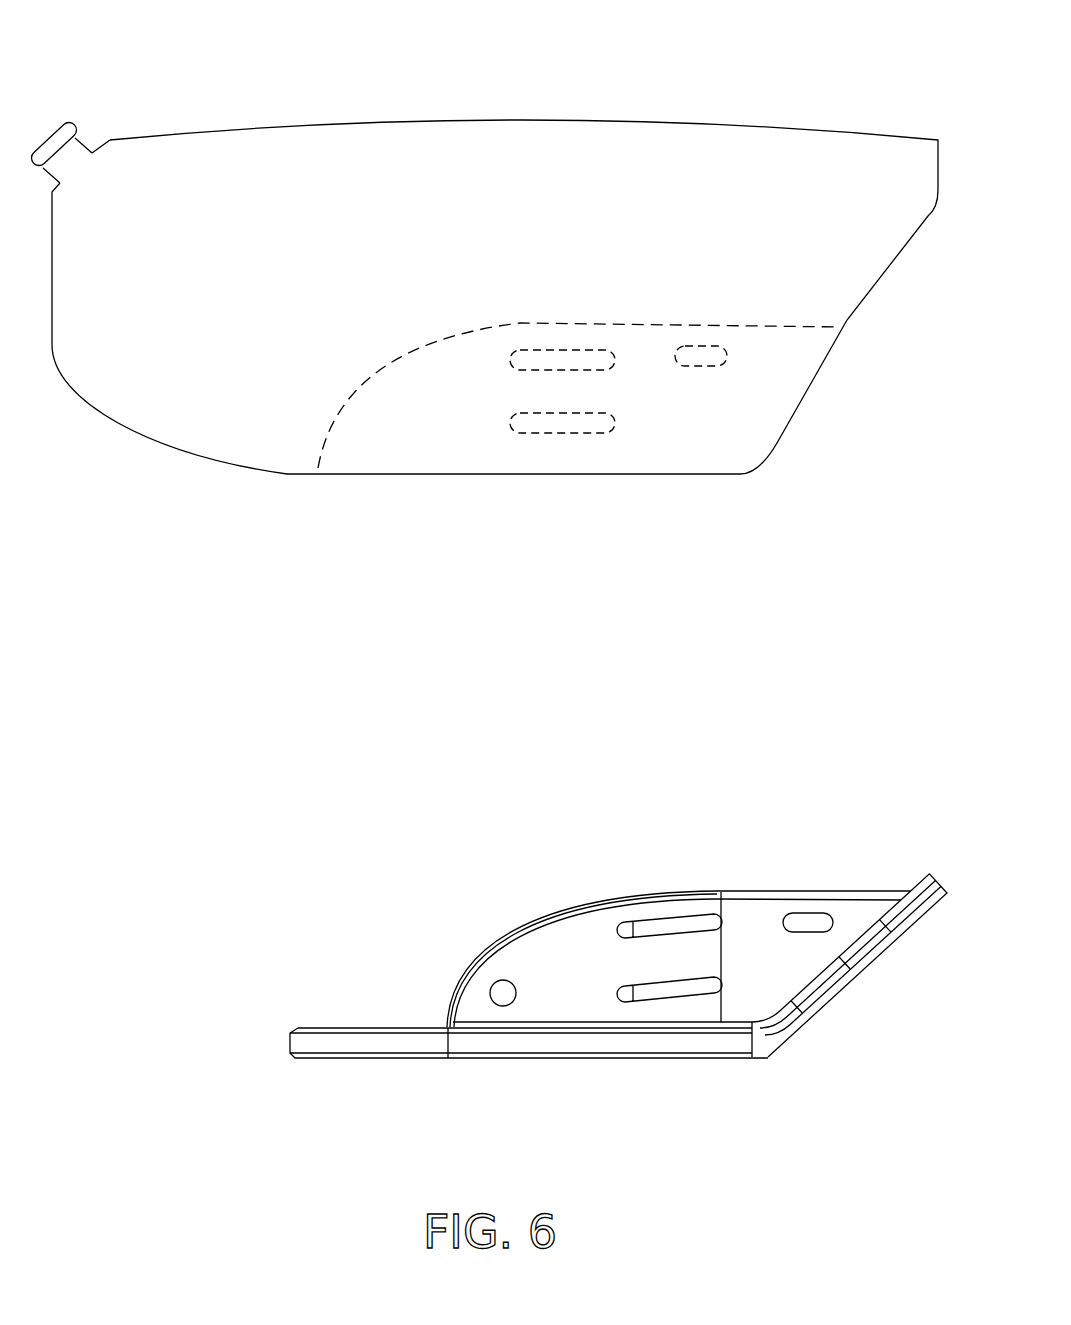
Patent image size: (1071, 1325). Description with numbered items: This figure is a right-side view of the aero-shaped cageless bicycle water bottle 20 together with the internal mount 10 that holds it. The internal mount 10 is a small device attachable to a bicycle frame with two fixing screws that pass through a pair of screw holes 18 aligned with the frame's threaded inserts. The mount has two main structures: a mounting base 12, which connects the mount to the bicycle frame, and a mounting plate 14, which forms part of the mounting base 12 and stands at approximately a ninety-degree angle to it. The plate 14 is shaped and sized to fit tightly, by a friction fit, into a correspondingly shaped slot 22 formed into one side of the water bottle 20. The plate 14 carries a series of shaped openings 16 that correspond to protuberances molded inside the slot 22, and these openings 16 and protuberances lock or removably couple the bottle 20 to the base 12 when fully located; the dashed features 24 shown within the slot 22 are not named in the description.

The internal mount 10 is at (618, 921).
The mounting base 12 is at (415, 1045).
The mounting plate 14 is at (847, 910).
The shaped openings 16 is at (797, 918).
The screw holes 18 is at (362, 1013).
The aero-shaped cageless bicycle water bottle 20 is at (720, 90).
The slot 22 is at (473, 495).
The slots in tank 24 is at (698, 355).